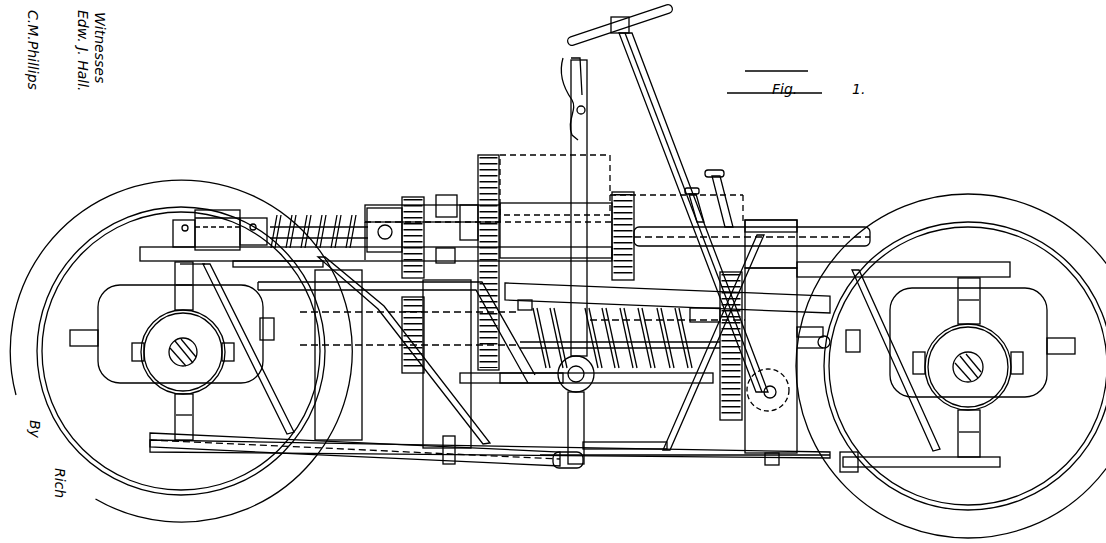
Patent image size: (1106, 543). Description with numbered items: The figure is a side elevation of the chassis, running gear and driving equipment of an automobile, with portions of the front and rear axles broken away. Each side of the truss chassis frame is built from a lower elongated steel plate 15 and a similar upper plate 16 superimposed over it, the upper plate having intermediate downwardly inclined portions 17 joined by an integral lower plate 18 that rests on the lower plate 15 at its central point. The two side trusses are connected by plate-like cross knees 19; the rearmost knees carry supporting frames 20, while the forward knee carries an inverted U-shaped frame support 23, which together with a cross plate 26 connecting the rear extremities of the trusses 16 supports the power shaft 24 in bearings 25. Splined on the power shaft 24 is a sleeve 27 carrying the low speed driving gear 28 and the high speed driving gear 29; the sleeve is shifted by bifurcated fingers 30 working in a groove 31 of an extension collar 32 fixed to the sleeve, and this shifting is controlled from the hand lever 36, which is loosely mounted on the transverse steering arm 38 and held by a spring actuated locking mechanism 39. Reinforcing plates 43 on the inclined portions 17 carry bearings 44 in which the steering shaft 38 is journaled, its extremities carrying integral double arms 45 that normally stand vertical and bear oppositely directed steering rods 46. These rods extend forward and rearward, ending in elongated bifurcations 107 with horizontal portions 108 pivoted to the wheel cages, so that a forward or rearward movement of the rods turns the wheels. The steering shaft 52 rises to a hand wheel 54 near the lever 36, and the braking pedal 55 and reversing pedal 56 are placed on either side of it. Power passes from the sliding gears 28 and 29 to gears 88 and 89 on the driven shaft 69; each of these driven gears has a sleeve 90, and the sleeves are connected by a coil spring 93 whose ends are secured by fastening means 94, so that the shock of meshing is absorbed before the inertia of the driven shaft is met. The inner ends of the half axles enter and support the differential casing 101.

The lower elongated steel plate 15 is at (710, 457).
The upper truss plate 16 is at (266, 247).
The downwardly inclined portions 17 is at (417, 366).
The integral lower plate 18 is at (603, 444).
The cross knees 19 is at (365, 455).
The supporting frames 20 is at (522, 359).
The frame support plate 23 is at (758, 434).
The power shaft 24 is at (815, 228).
The bearings 25 is at (214, 210).
The cross plate 26 is at (198, 232).
The sleeve 27 is at (519, 217).
The low speed driving gear 28 is at (623, 195).
The high speed driving gear 29 is at (485, 155).
The bifurcated fingers 30 is at (445, 205).
The groove 31 is at (442, 218).
The extension collar 32 is at (470, 213).
The hand lever 36 is at (590, 145).
The transverse steering shaft 38 is at (584, 384).
The spring actuated locking mechanism 39 is at (568, 105).
The reinforcing plates 43 is at (487, 385).
The bearings 44 is at (565, 390).
The double arms 45 is at (574, 430).
The steering rods 46 is at (416, 440).
The steering shaft 52 is at (652, 95).
The hand wheel 54 is at (576, 36).
The braking pedal 55 is at (716, 170).
The reversing pedal 56 is at (697, 192).
The driven shaft 69 is at (812, 340).
The driven gear 88 is at (770, 238).
The driven gear 89 is at (487, 306).
The gear sleeve 90 is at (507, 312).
The coil spring 93 is at (640, 312).
The fastening means 94 is at (523, 300).
The differential casing 101 is at (1030, 322).
The elongated bifurcation 107 is at (270, 390).
The horizontal portions 108 is at (172, 264).